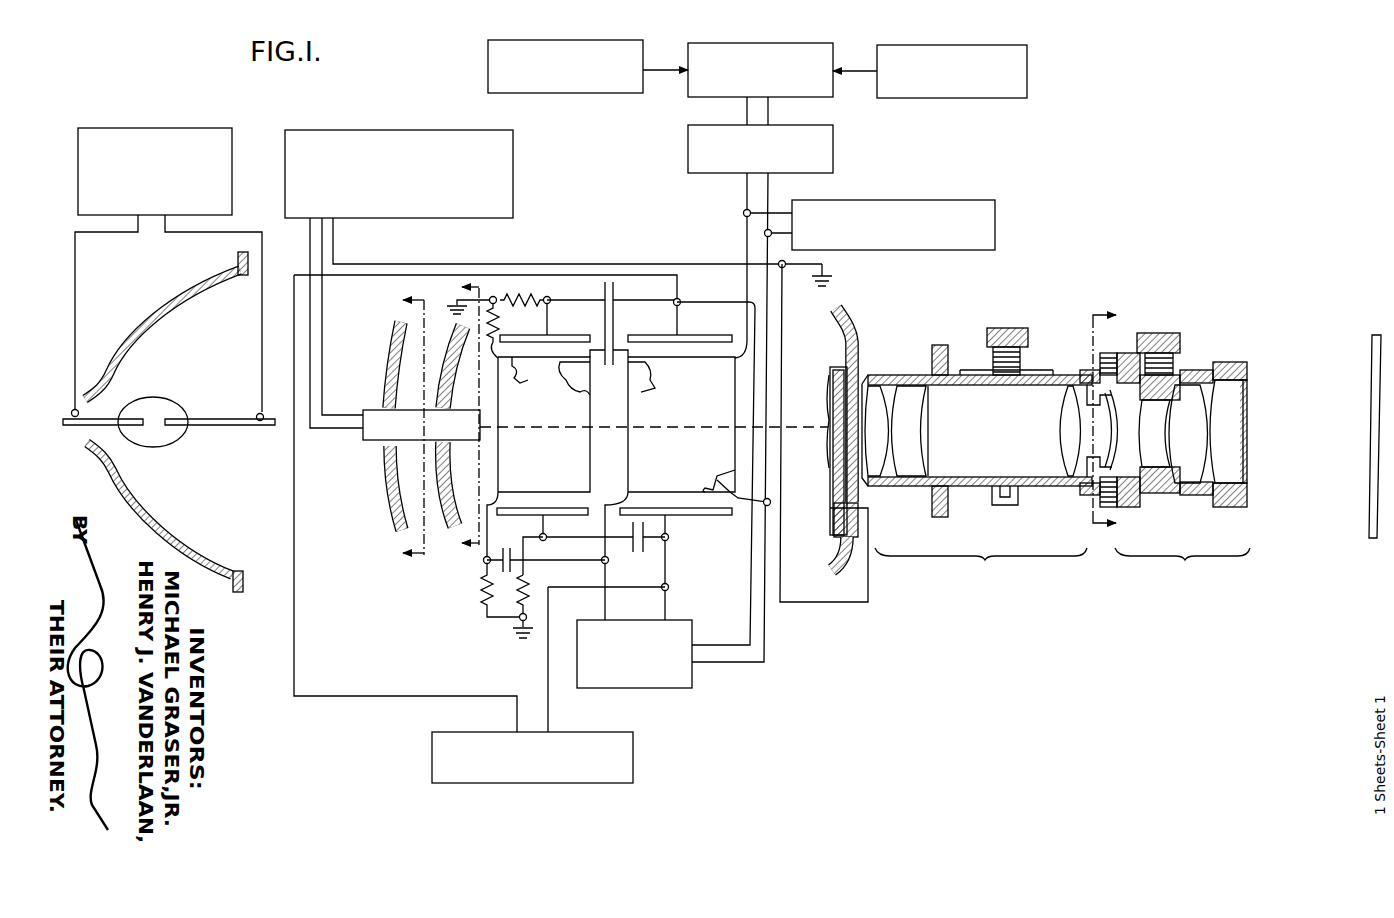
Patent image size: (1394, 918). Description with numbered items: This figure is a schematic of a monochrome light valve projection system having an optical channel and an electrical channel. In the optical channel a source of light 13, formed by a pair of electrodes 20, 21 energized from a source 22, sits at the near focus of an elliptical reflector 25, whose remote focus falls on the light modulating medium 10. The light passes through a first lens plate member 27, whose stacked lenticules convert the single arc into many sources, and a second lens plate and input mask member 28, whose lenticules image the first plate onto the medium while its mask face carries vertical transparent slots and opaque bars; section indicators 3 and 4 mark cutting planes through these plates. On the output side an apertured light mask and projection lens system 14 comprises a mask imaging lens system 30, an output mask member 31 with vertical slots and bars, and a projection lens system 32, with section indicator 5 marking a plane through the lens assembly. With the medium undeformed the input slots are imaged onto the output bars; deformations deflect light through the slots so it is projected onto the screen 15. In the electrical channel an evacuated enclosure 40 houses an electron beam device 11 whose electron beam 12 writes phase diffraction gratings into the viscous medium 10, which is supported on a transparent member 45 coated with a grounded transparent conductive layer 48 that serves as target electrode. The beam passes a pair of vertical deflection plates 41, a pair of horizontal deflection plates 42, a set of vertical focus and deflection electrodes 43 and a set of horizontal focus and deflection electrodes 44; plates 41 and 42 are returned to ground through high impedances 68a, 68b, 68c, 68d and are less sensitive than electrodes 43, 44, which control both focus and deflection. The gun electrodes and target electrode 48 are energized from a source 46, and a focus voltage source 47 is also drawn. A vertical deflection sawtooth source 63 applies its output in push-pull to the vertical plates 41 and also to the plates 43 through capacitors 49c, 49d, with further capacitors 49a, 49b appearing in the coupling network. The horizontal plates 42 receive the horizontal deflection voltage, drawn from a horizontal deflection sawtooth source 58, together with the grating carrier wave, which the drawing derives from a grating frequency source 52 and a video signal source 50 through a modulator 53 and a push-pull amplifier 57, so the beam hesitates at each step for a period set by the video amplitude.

The light modulating medium 10 is at (830, 378).
The electron beam device 11 is at (368, 435).
The electron beam 12 is at (690, 426).
The source of light 13 is at (158, 397).
The apertured light mask and projection lens system 14 is at (1053, 500).
The screen 15 is at (1372, 505).
The electrode 20 is at (72, 428).
The electrode 21 is at (214, 428).
The source 22 is at (150, 128).
The elliptical reflector 25 is at (162, 312).
The first lens plate member 27 is at (402, 380).
The second lens plate and input mask member 28 is at (448, 505).
The mask imaging lens system 30 is at (1001, 467).
The output mask member 31 is at (1075, 420).
The projection lens system 32 is at (1192, 473).
The section line 3 is at (457, 415).
The section line 4 is at (399, 427).
The section line 5 is at (1096, 420).
The evacuated enclosure 40 is at (856, 343).
The vertical deflection plates 41 is at (567, 335).
The horizontal deflection plates 42 is at (502, 390).
The vertical focus and deflection electrodes 43 is at (704, 335).
The horizontal focus and deflection electrodes 44 is at (738, 490).
The transparent member 45 is at (838, 390).
The source 46 is at (384, 130).
The focus voltage source 47 is at (650, 688).
The transparent conductive layer 48 is at (838, 482).
The capacitor 49a is at (603, 386).
The deflection plate 49b is at (540, 523).
The capacitor 49c is at (617, 296).
The capacitor 49d is at (638, 554).
The video signal source 50 is at (953, 45).
The grating frequency source 52 is at (565, 40).
The modulator 53 is at (762, 43).
The push pull amplifier 57 is at (833, 147).
The horizontal deflection sawtooth source 58 is at (940, 200).
The vertical deflection sawtooth source 63 is at (520, 783).
The high impedance 68a is at (535, 296).
The high impedance 68b is at (512, 604).
The high impedance 68c is at (499, 322).
The high impedance 68d is at (485, 582).